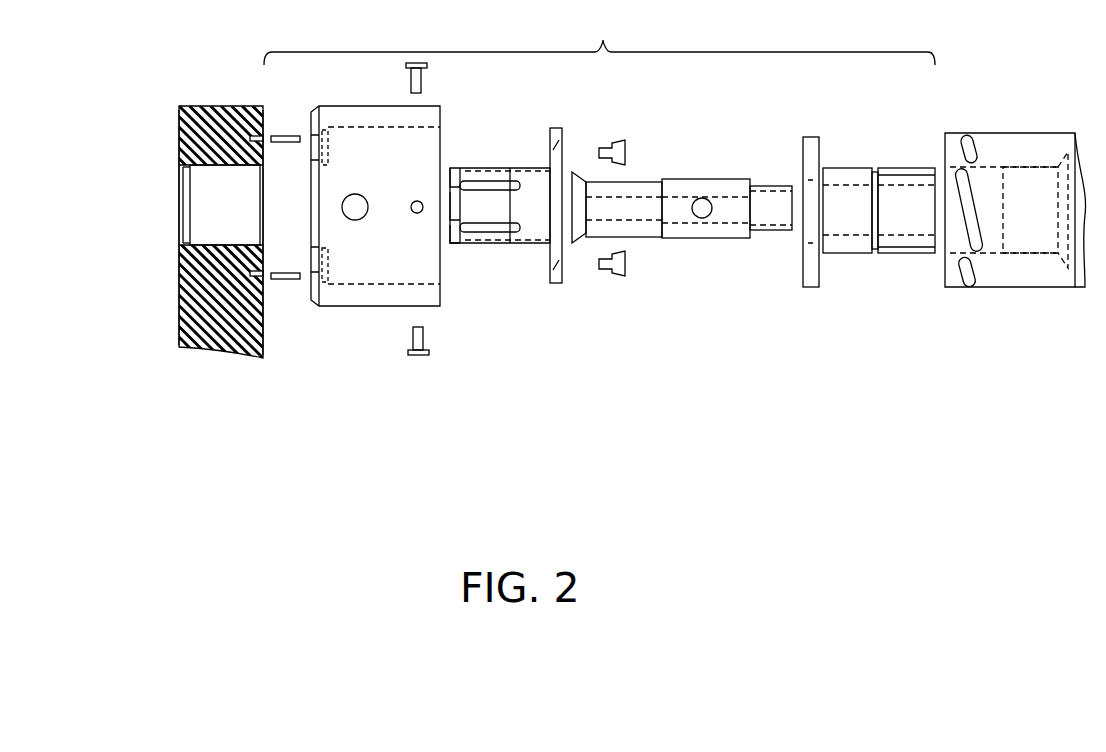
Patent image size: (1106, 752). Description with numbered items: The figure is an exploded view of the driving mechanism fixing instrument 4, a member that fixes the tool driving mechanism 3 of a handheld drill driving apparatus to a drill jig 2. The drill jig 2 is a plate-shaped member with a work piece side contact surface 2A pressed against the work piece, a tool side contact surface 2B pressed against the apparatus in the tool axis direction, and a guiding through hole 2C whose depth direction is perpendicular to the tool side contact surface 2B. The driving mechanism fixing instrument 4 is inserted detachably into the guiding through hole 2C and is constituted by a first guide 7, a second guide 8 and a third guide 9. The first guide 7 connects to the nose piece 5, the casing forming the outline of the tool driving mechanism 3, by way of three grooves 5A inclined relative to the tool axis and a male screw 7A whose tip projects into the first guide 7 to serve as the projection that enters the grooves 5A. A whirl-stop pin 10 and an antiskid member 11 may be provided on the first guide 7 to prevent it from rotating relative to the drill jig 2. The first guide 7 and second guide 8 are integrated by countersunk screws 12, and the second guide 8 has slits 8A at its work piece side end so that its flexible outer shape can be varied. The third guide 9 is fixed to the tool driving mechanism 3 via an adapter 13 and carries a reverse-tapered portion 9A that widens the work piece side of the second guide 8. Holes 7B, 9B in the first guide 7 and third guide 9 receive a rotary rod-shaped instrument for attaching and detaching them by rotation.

The drill jig 2 is at (215, 352).
The work piece side contact surface 2A is at (180, 330).
The tool side contact surface 2B is at (263, 340).
The guiding through hole 2C is at (212, 205).
The tool driving mechanism 3 is at (1060, 125).
The driving mechanism fixing instrument 4 is at (599, 37).
The nose piece 5 is at (1015, 133).
The grooves 5A is at (970, 275).
The first guide 7 is at (378, 307).
The male screw 7A is at (425, 342).
The hole 7B is at (356, 210).
The second guide 8 is at (523, 243).
The slits 8A is at (493, 232).
The third guide 9 is at (683, 238).
The tapered portion 9A is at (577, 235).
The hole 9B is at (703, 210).
The whirl-stop pin 10 is at (287, 143).
The antiskid member 11 is at (309, 285).
The countersunk screws 12 is at (613, 140).
The adapter 13 is at (888, 255).